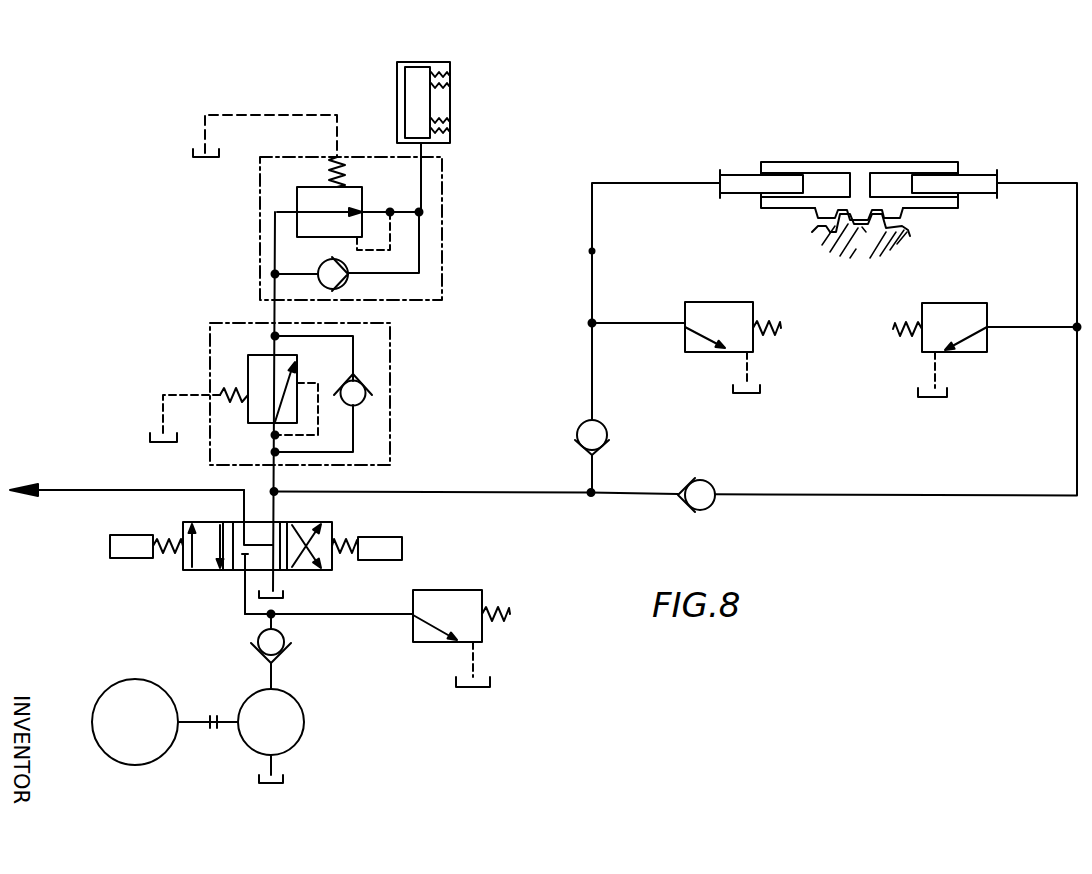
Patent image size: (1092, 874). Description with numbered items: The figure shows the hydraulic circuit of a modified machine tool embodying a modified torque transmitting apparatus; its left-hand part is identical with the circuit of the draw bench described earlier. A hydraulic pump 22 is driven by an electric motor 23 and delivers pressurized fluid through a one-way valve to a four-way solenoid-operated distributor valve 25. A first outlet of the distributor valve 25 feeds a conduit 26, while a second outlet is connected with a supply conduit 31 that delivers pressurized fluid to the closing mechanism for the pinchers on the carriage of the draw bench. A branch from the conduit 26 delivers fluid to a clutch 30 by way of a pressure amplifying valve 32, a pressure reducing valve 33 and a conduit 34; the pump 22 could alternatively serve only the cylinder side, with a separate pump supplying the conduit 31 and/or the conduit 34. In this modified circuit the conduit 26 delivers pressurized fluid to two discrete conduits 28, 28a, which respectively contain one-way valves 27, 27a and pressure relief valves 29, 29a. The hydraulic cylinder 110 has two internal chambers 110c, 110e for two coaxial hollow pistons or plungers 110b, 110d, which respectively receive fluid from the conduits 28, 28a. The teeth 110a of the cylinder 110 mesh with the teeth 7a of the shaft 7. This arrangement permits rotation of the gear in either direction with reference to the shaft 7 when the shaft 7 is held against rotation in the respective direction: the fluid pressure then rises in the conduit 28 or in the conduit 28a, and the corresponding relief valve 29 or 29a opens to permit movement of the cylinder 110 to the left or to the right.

The shaft 7 is at (865, 252).
The teeth of the shaft 7a is at (817, 227).
The hydraulic pump 22 is at (288, 722).
The electric motor 23 is at (92, 722).
The four-way solenoid-operated distributor valve 25 is at (320, 538).
The conduit 26 is at (469, 492).
The one-way valve 27 is at (577, 432).
The one-way valve 27a is at (700, 480).
The conduit 28 is at (592, 251).
The conduit 28a is at (848, 495).
The pressure relief valve 29 is at (702, 312).
The pressure relief valve 29a is at (972, 317).
The clutch 30 is at (420, 102).
The supply conduit 31 is at (80, 490).
The pressure amplifying valve 32 is at (262, 370).
The pressure reducing valve 33 is at (310, 197).
The conduit 34 is at (423, 178).
The hydraulic cylinder 110 is at (862, 182).
The teeth of the cylinder 110a is at (907, 213).
The hollow piston or plunger 110b is at (738, 182).
The internal chamber 110c is at (822, 182).
The hollow piston or plunger 110d is at (980, 182).
The internal chamber 110e is at (897, 182).